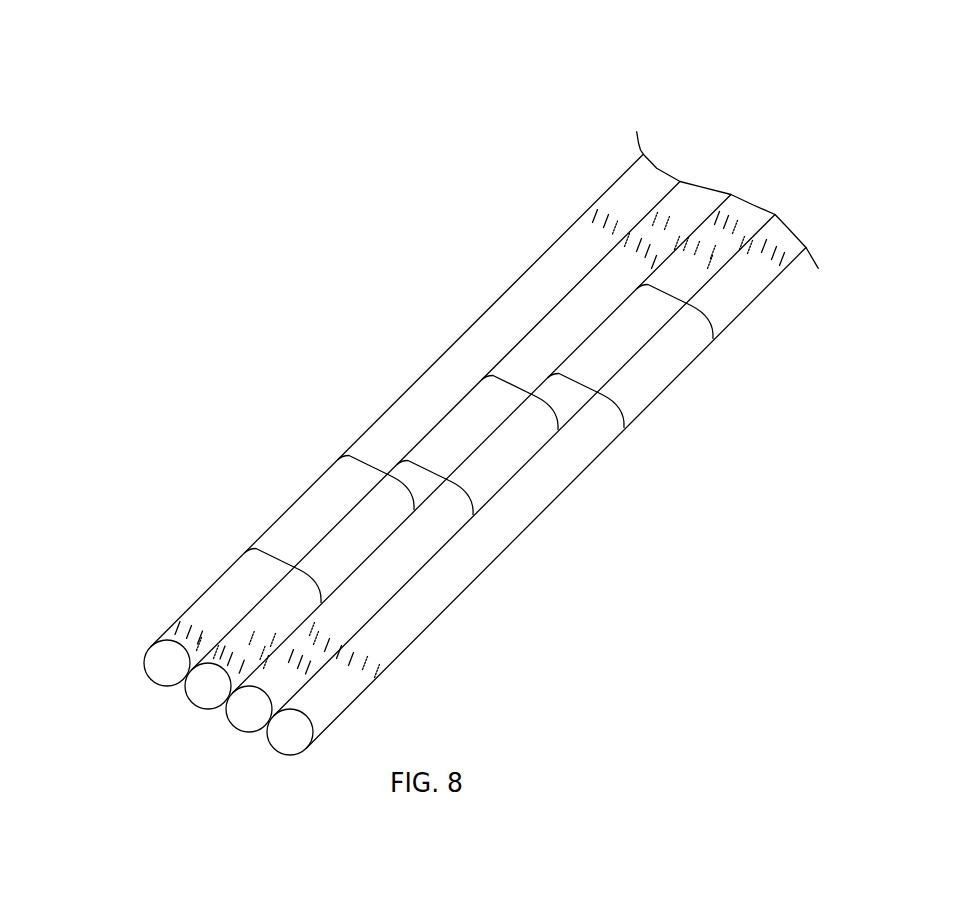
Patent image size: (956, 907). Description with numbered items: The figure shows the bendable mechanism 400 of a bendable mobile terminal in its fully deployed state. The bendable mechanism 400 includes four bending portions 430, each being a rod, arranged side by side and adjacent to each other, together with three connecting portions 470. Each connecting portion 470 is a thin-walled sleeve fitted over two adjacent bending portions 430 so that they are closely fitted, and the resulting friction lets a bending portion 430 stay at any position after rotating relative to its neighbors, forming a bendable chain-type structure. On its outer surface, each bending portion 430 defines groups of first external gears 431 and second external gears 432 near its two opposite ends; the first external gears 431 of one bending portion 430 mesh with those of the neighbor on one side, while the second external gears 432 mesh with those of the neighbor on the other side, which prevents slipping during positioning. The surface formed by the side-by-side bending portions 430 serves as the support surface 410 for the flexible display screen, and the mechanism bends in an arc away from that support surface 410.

The bendable mechanism 400 is at (675, 81).
The support surface 410 is at (583, 283).
The bending portion 430 is at (585, 438).
The connecting portion 470 is at (473, 412).
The first external gear 431 is at (263, 655).
The second external gear 432 is at (310, 638).